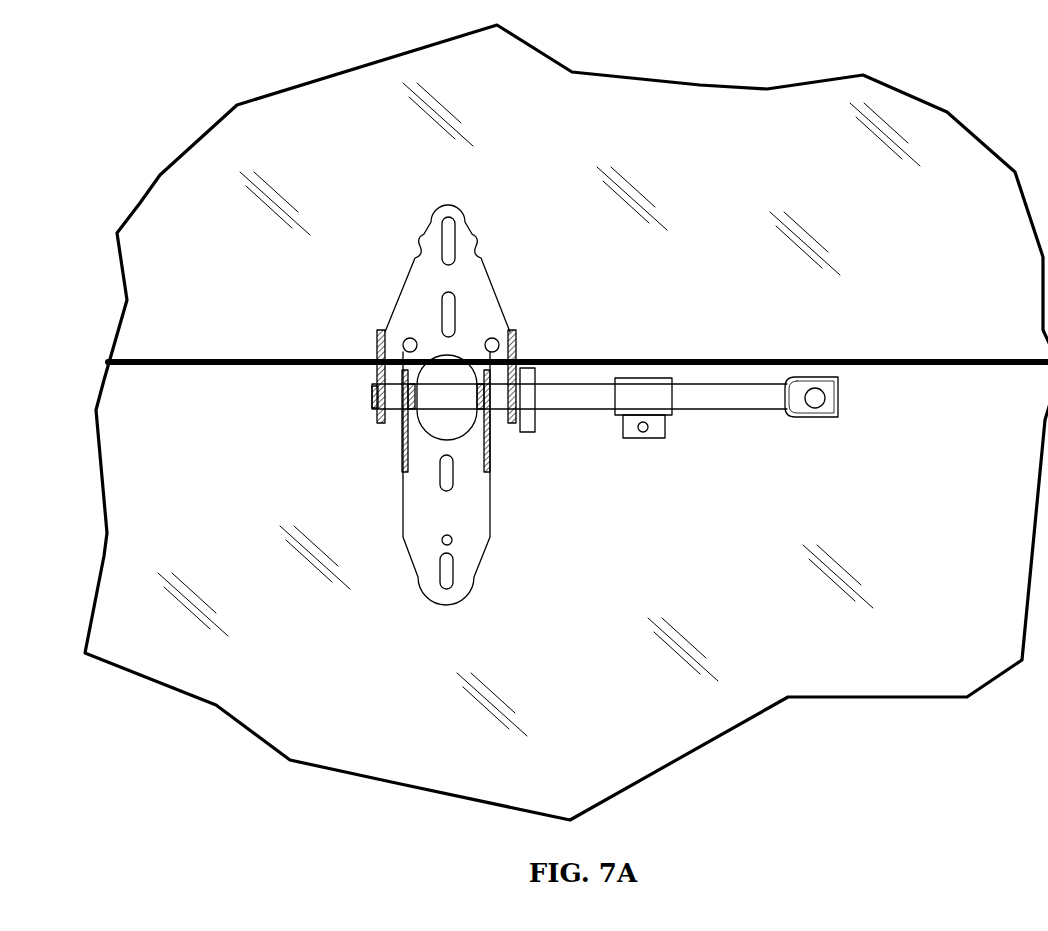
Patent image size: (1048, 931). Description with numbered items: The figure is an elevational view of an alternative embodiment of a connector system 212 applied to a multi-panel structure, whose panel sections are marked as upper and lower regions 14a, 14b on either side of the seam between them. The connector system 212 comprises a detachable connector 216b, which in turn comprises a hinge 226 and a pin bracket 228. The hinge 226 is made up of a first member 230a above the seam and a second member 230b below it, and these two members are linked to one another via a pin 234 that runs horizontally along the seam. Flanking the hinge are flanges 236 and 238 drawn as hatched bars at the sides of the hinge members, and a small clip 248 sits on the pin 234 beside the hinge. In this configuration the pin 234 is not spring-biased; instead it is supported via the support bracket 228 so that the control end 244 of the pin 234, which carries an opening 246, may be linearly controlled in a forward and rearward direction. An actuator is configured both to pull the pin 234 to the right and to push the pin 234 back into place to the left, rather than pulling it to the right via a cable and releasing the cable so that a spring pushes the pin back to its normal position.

The connector system 212 is at (150, 150).
The upper panel section 14a is at (578, 295).
The lower panel section 14b is at (574, 517).
The detachable connector 216b is at (519, 197).
The hinge 226 is at (508, 273).
The first member 230a is at (412, 280).
The second member 230b is at (482, 516).
The outer flanges 236 is at (380, 346).
The inner flanges 238 is at (396, 448).
The pin 234 is at (588, 397).
The retaining clip 248 is at (535, 363).
The pin bracket 228 is at (658, 388).
The control end 244 is at (838, 380).
The pivot aperture 246 is at (824, 409).